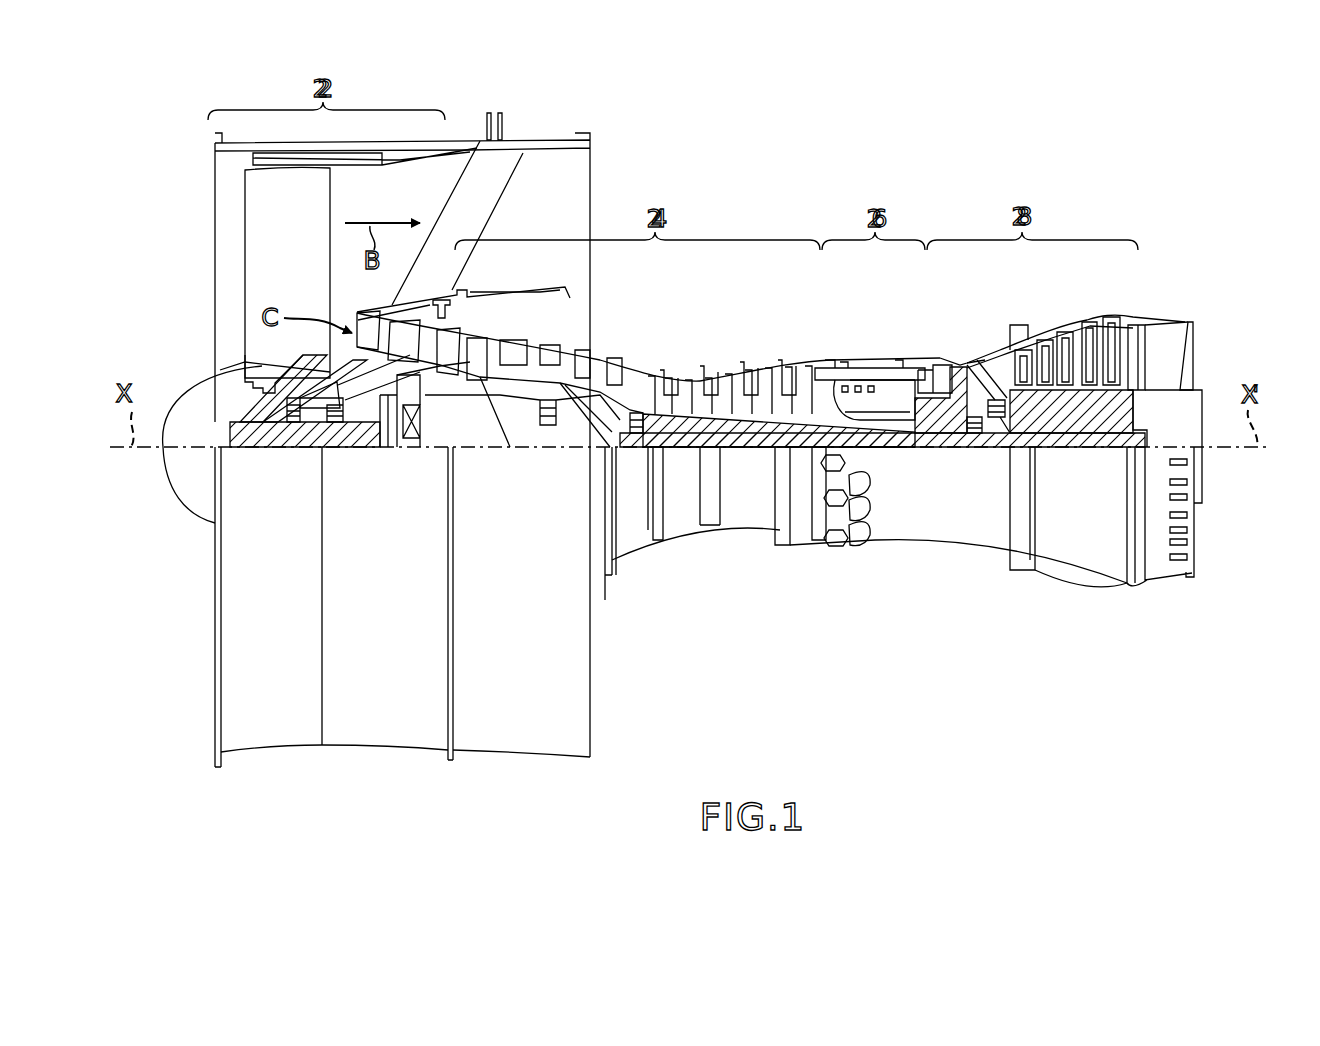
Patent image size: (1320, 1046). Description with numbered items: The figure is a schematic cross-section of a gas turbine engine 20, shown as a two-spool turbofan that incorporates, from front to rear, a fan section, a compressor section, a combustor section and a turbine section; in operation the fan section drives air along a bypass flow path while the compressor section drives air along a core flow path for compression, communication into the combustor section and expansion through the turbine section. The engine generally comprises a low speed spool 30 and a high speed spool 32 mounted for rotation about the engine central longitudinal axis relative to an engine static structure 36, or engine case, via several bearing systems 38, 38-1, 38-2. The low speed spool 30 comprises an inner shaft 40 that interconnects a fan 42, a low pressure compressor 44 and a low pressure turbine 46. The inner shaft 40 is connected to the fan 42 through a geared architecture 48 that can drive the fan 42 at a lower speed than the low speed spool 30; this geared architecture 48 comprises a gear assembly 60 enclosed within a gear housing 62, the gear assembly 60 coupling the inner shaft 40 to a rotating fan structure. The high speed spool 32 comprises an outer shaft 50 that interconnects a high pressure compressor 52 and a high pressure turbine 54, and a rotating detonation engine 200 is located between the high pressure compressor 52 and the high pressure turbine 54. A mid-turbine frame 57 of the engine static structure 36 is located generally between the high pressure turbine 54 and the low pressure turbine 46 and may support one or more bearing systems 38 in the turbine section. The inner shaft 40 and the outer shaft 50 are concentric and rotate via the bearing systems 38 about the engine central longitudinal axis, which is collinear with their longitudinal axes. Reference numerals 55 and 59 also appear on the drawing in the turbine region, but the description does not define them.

The gas turbine engine 20 is at (920, 176).
The low speed spool 30 is at (758, 460).
The high speed spool 32 is at (794, 410).
The engine static structure 36 is at (382, 730).
The bearing system 38 is at (984, 440).
The bearing system 38-1 is at (296, 428).
The bearing system 38-2 is at (548, 438).
The inner shaft 40 is at (612, 462).
The fan 42 is at (270, 267).
The low pressure compressor 44 is at (522, 350).
The low pressure turbine 46 is at (1070, 336).
The geared architecture 48 is at (410, 458).
The outer shaft 50 is at (878, 432).
The high pressure compressor 52 is at (738, 414).
The high pressure turbine 54 is at (940, 368).
The mid-turbine frame 55 is at (962, 376).
The mid-turbine frame 57 is at (976, 378).
The vanes 59 is at (1000, 365).
The gear assembly 60 is at (422, 425).
The gear housing 62 is at (414, 392).
The rotating detonation engine 200 is at (870, 390).